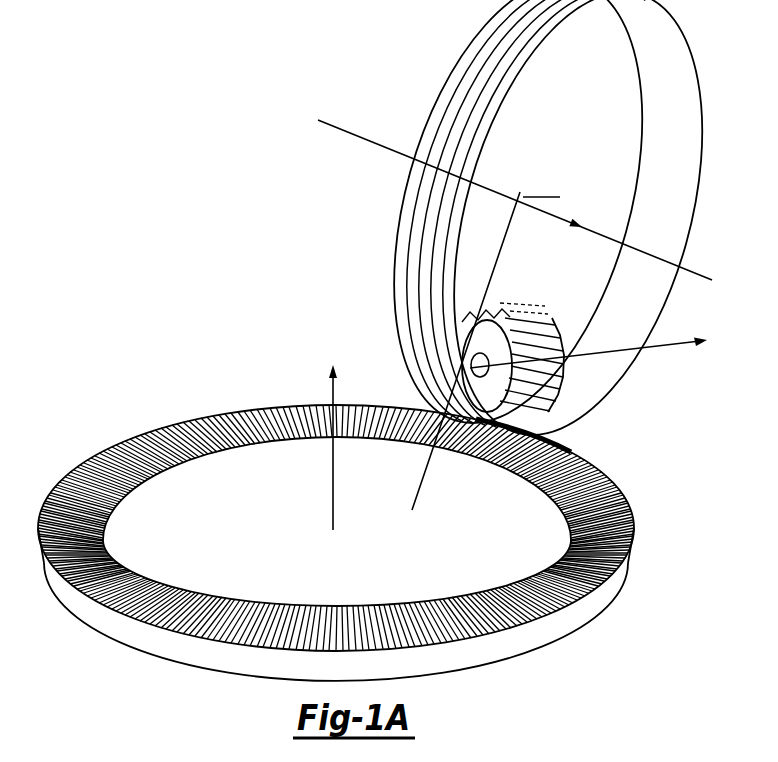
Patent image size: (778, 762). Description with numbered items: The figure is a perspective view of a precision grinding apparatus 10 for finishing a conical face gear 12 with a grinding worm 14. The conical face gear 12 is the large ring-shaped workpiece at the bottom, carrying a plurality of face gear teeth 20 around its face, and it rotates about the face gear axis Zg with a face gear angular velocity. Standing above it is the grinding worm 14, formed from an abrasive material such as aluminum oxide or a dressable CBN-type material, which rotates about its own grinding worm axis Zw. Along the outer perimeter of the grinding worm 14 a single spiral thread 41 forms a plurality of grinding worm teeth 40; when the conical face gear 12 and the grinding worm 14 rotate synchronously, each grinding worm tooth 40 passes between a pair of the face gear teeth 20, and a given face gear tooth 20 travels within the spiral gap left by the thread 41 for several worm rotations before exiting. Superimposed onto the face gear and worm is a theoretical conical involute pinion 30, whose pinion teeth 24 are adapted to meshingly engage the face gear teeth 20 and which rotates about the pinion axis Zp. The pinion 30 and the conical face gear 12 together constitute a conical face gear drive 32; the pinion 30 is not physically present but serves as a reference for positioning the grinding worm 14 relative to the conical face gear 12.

The precision grinding apparatus 10 is at (214, 354).
The conical face gear 12 is at (228, 680).
The face gear teeth 20 is at (494, 674).
The grinding worm 14 is at (652, 33).
The grinding worm teeth 40 is at (449, 114).
The spiral thread 41 is at (476, 48).
The pinion teeth 24 is at (562, 328).
The conical involute pinion 30 is at (558, 380).
The conical face gear drive 32 is at (556, 433).